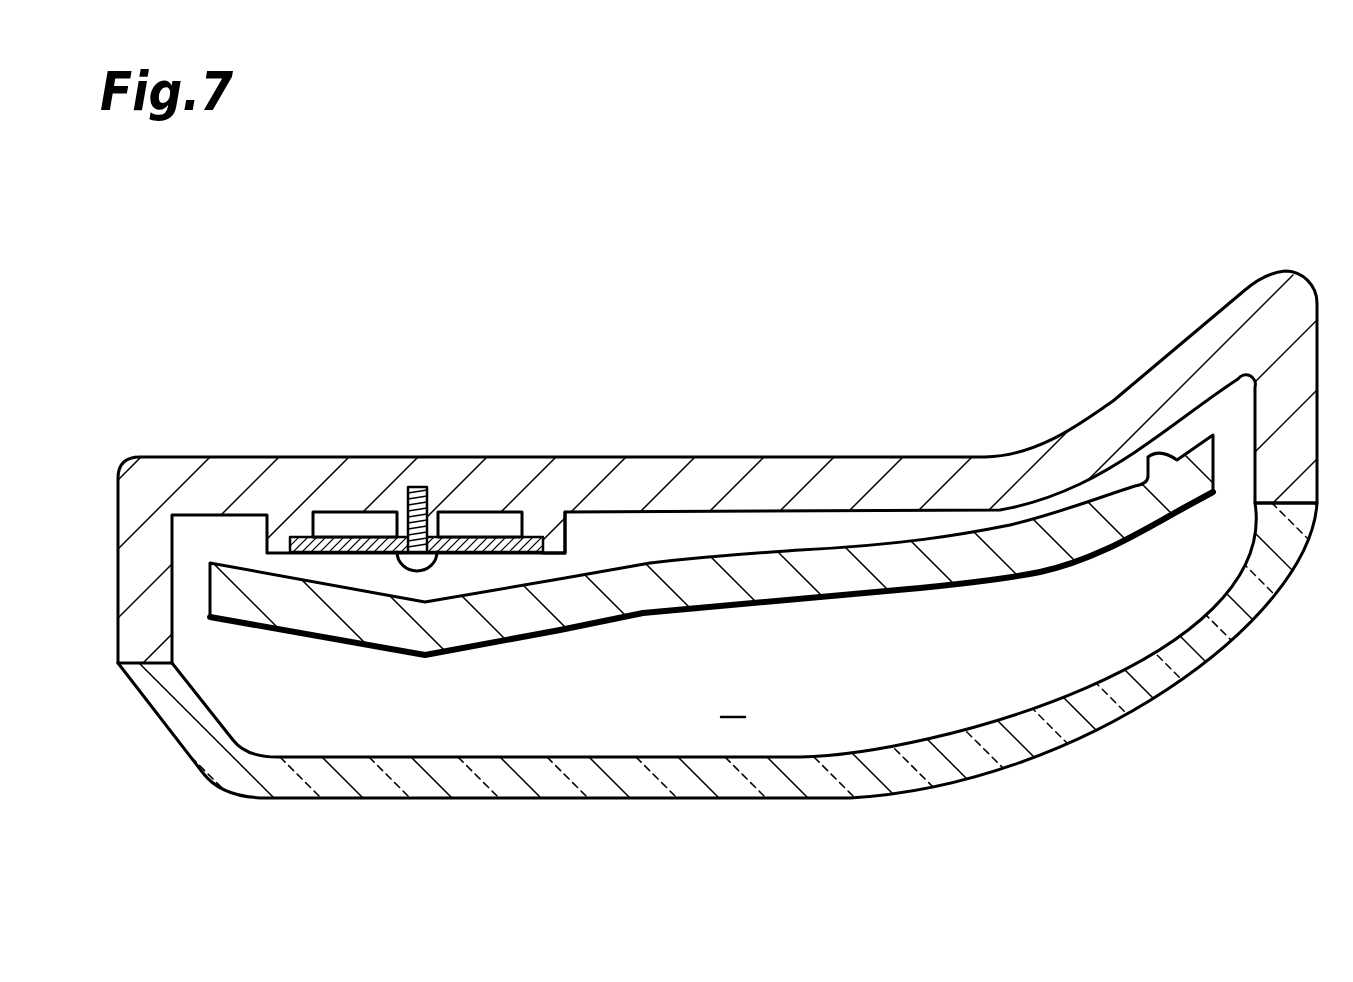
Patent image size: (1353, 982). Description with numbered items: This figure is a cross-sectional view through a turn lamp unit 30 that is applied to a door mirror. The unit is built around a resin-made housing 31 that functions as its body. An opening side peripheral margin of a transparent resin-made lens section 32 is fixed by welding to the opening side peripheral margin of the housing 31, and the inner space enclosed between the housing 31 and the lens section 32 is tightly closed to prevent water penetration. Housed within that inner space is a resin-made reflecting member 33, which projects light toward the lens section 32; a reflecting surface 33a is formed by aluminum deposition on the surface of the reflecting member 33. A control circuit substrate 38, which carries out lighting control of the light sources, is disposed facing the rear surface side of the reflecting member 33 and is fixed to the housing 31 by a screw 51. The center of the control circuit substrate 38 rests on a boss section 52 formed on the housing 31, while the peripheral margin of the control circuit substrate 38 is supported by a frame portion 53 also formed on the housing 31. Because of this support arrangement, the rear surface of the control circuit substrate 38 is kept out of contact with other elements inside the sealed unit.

The turn lamp unit 30 is at (168, 306).
The housing 31 is at (920, 466).
The lens section 32 is at (977, 760).
The reflecting member 33 is at (750, 573).
The reflecting surface 33a is at (962, 594).
The control circuit substrate 38 is at (483, 543).
The screw 51 is at (410, 487).
The boss section 52 is at (434, 525).
The frame portion 53 is at (557, 537).